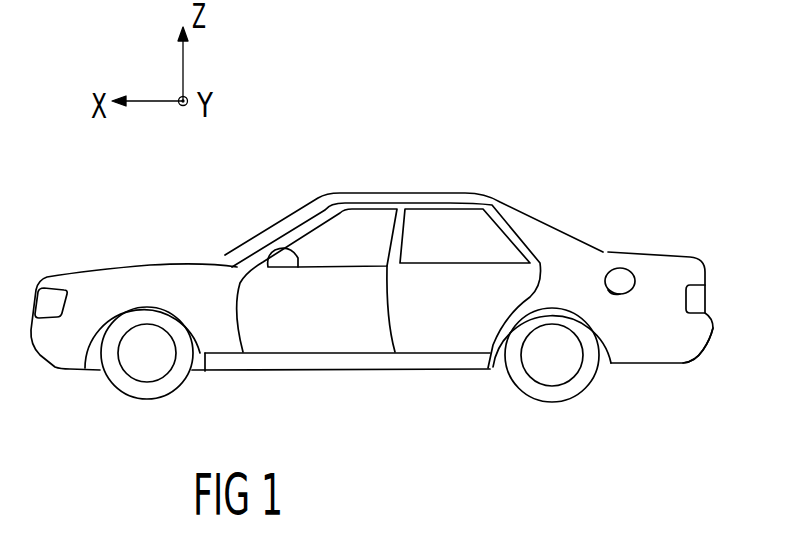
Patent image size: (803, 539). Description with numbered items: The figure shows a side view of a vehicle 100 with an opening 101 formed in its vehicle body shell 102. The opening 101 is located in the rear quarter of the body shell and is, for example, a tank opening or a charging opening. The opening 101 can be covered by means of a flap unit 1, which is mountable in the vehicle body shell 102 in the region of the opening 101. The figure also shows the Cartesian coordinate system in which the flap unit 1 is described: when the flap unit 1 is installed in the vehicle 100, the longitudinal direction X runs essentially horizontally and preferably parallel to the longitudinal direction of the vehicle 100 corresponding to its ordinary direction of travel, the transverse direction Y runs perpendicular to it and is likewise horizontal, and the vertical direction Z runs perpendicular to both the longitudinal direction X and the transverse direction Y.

The vehicle 100 is at (473, 180).
The opening 101 is at (619, 282).
The flap unit 1 is at (613, 296).
The vehicle body shell 102 is at (680, 334).